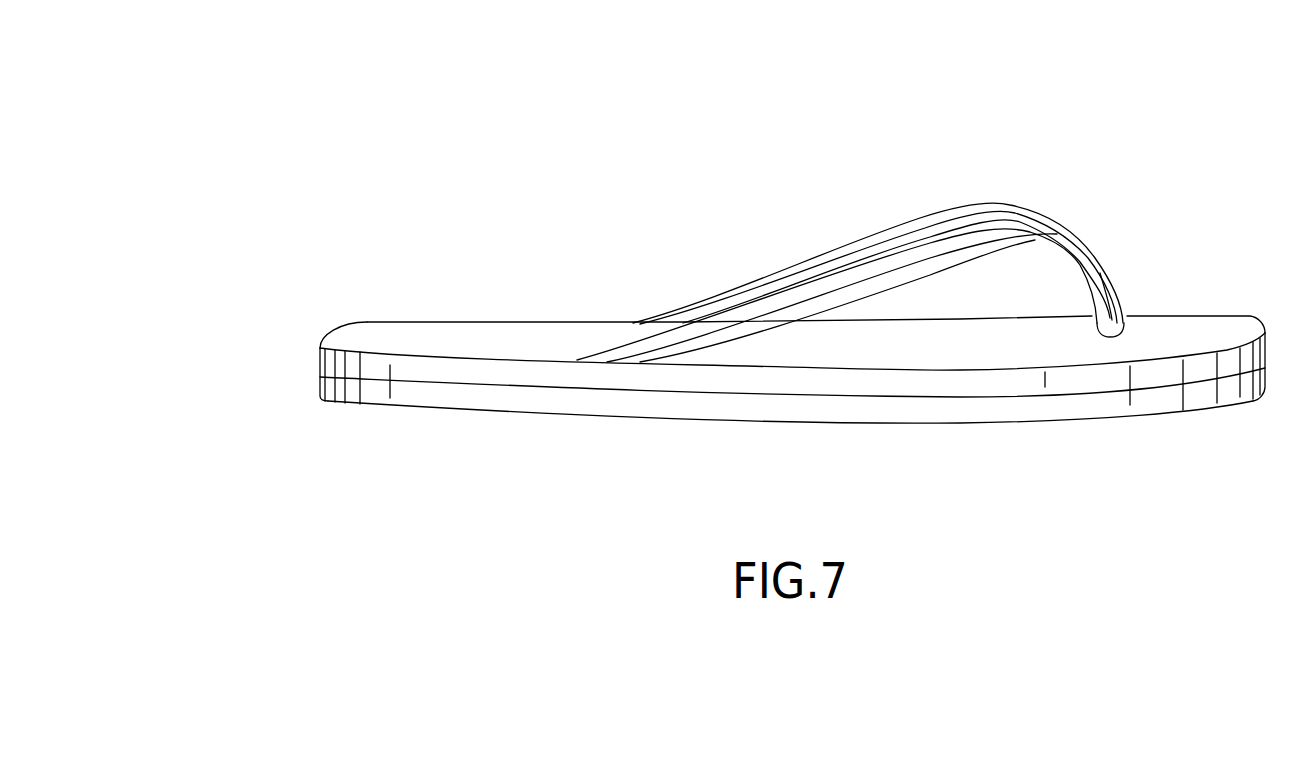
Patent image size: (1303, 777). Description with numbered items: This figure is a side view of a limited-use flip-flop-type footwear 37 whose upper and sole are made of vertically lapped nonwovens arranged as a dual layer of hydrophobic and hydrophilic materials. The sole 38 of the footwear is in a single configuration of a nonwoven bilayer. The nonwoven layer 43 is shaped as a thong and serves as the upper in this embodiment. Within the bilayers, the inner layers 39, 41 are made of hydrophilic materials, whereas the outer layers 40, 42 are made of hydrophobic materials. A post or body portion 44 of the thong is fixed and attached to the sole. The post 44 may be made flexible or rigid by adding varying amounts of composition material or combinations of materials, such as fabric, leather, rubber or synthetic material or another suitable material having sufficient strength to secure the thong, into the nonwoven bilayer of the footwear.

The flip-flop-type footwear 37 is at (447, 153).
The sole 38 is at (767, 425).
The inner layer 39 is at (403, 368).
The outer layer 40 is at (452, 403).
The inner layer 41 is at (873, 293).
The outer layer 42 is at (840, 283).
The nonwoven layer 43 is at (925, 247).
The post 44 is at (1112, 304).